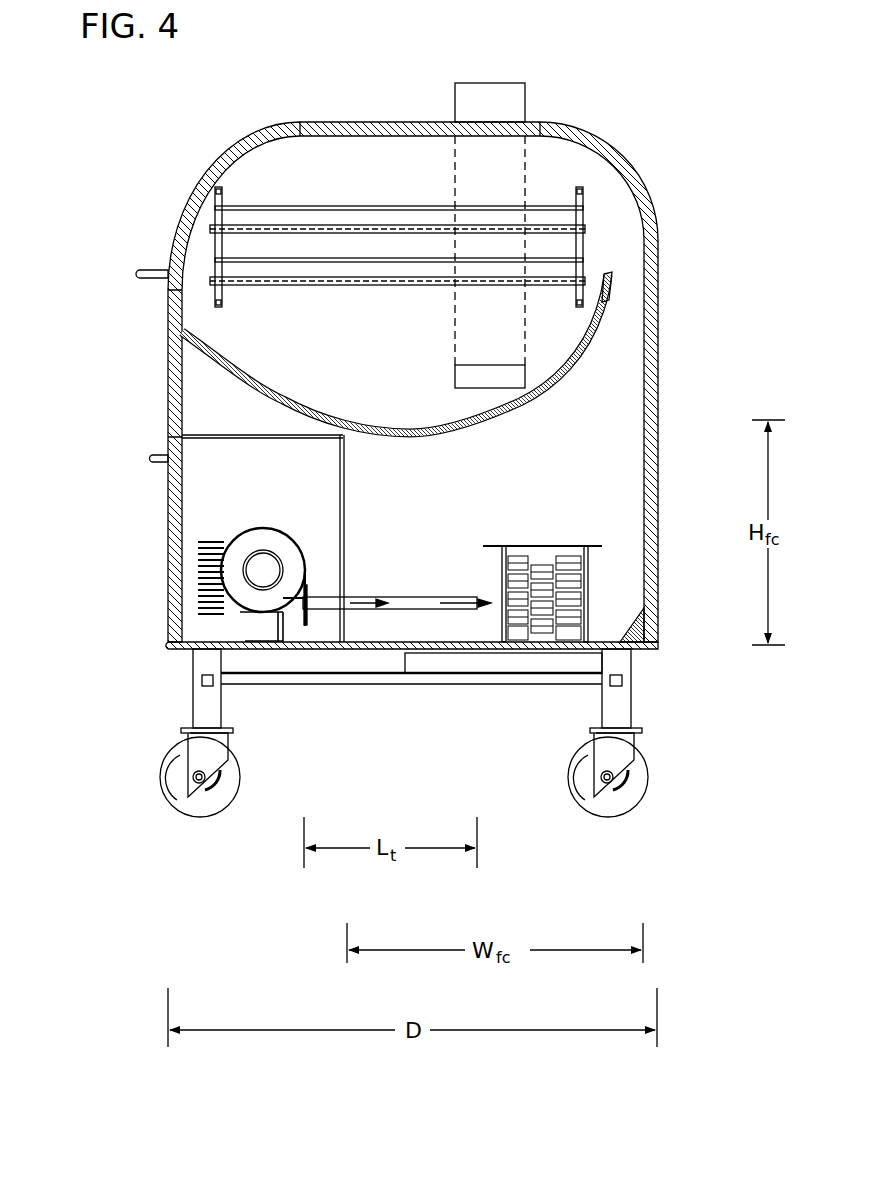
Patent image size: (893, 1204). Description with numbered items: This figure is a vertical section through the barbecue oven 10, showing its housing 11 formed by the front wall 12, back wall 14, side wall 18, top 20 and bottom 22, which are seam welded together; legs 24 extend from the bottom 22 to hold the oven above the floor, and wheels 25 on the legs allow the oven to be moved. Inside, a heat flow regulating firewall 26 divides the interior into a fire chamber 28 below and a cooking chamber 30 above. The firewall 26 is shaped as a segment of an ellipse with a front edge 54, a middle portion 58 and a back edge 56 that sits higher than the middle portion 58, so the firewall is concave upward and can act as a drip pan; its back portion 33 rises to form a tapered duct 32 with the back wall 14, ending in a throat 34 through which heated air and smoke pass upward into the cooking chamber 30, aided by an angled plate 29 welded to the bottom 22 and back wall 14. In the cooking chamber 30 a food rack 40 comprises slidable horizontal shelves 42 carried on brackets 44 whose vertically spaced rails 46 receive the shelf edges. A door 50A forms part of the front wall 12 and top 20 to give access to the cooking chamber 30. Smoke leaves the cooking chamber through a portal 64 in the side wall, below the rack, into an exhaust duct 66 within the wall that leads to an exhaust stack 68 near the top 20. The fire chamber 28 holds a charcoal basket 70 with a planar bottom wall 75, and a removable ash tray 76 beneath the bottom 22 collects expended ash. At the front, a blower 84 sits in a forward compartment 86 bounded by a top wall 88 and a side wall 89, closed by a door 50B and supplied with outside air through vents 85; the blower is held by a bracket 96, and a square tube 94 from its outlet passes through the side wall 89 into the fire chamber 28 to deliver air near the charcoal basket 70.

The barbecue oven 10 is at (681, 97).
The housing 11 is at (606, 124).
The front wall 12 is at (167, 338).
The back wall 14 is at (680, 462).
The side wall 18 is at (610, 260).
The top 20 is at (353, 122).
The bottom 22 is at (390, 647).
The legs 24 is at (203, 708).
The wheels 25 is at (173, 792).
The firewall 26 is at (453, 431).
The fire chamber 28 is at (578, 518).
The angled plate 29 is at (648, 627).
The cooking chamber 30 is at (226, 146).
The tapered duct 32 is at (616, 358).
The back portion 33 is at (540, 343).
The throat 34 is at (622, 318).
The food rack 40 is at (393, 184).
The shelves 42 is at (432, 273).
The brackets 44 is at (217, 247).
The rails 46 is at (213, 230).
The door 50A is at (271, 181).
The door 50B is at (165, 542).
The front edge 54 is at (233, 362).
The back edge 56 is at (600, 298).
The middle portion 58 is at (397, 430).
The portal 64 is at (487, 382).
The exhaust duct 66 is at (513, 165).
The exhaust stack 68 is at (492, 83).
The charcoal basket 70 is at (594, 571).
The bottom wall 75 is at (537, 633).
The ash tray 76 is at (590, 670).
The blower 84 is at (200, 587).
The vents 85 is at (217, 612).
The forward compartment 86 is at (222, 518).
The top wall 88 is at (257, 438).
The side wall 89 is at (335, 492).
The square tube 94 is at (443, 610).
The bracket 96 is at (275, 641).